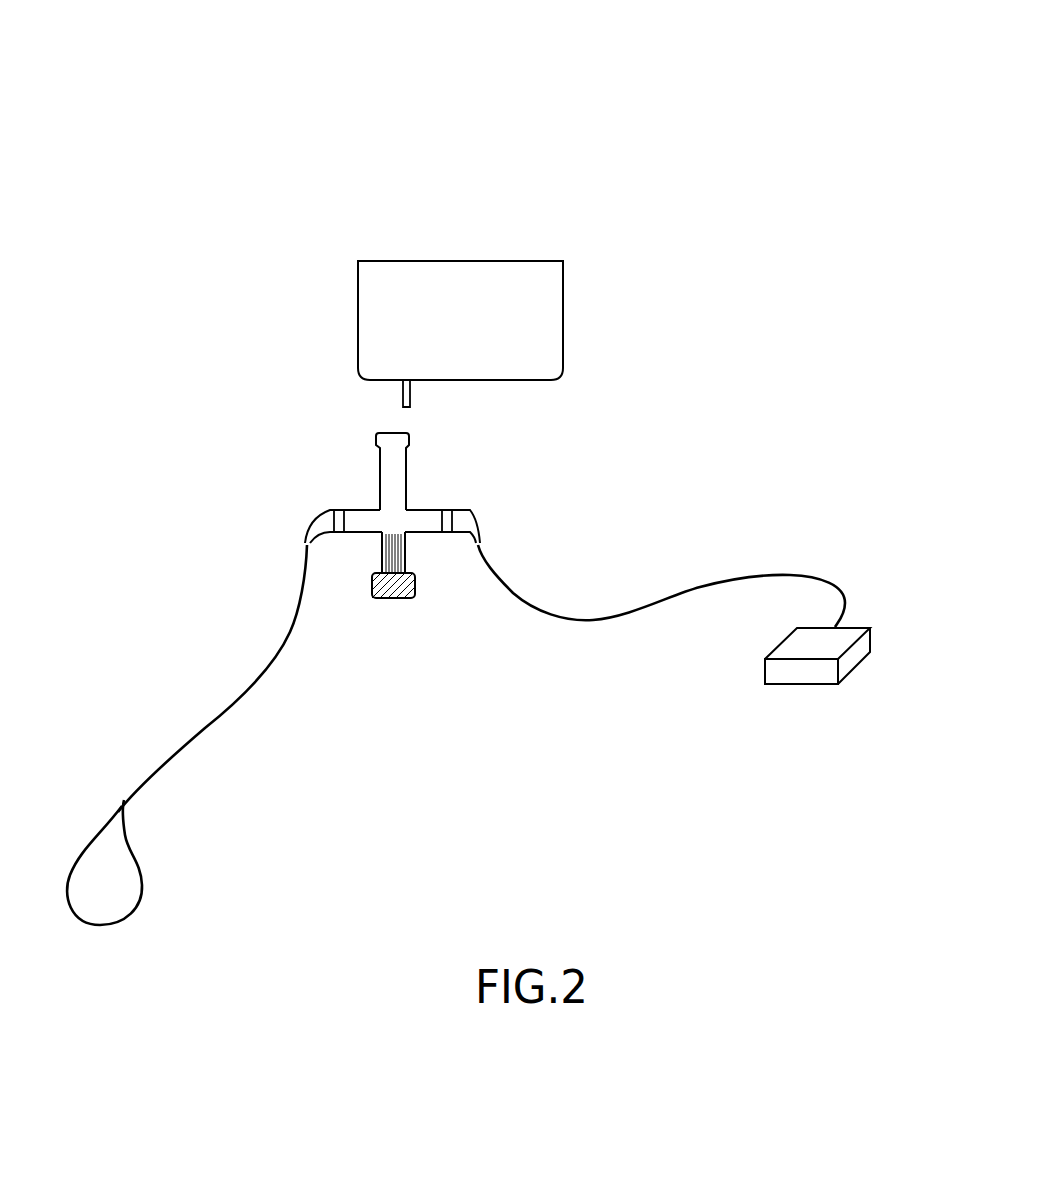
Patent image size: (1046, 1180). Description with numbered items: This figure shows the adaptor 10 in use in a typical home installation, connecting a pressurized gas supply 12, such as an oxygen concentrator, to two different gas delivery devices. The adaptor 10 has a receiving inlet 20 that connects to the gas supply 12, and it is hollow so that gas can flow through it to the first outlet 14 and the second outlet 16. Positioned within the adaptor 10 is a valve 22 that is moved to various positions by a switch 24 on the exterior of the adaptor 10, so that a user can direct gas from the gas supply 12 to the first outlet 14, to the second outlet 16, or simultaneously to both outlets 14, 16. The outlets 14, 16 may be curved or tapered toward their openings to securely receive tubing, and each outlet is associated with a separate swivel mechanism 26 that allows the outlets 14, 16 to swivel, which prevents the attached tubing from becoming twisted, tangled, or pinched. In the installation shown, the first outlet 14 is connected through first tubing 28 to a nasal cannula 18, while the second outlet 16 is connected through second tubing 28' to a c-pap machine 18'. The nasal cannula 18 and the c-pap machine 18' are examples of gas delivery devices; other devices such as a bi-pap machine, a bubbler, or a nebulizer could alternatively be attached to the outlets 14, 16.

The adaptor 10 is at (553, 102).
The pressurized gas supply 12 is at (547, 352).
The first outlet 14 is at (323, 512).
The second outlet 16 is at (483, 537).
The nasal cannula 18 is at (146, 862).
The c-pap machine 18' is at (852, 642).
The receiving inlet 20 is at (405, 441).
The valve 22 is at (408, 537).
The switch 24 is at (378, 598).
The swivel mechanism 26 is at (338, 510).
The first tubing 28 is at (212, 678).
The second tubing 28' is at (661, 565).